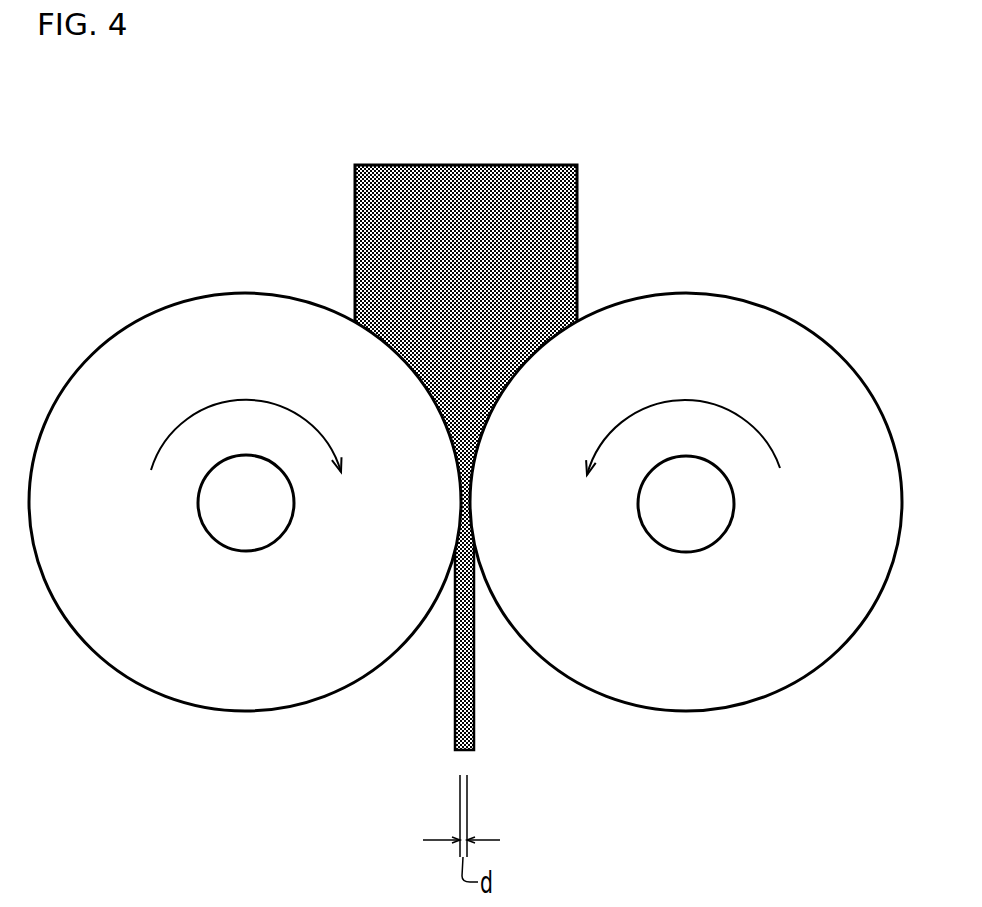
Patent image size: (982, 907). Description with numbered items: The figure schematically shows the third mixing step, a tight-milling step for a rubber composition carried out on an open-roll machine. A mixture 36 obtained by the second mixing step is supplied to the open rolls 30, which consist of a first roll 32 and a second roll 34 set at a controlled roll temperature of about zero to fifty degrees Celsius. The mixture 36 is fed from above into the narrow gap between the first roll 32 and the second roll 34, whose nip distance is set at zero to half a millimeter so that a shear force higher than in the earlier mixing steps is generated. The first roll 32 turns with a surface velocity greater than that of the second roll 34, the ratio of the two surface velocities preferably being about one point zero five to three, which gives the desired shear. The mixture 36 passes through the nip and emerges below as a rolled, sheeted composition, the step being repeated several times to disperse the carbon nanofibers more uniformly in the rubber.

The open rolls 30 is at (465, 423).
The first roll 32 is at (717, 651).
The second roll 34 is at (274, 651).
The mixture 36 is at (393, 196).